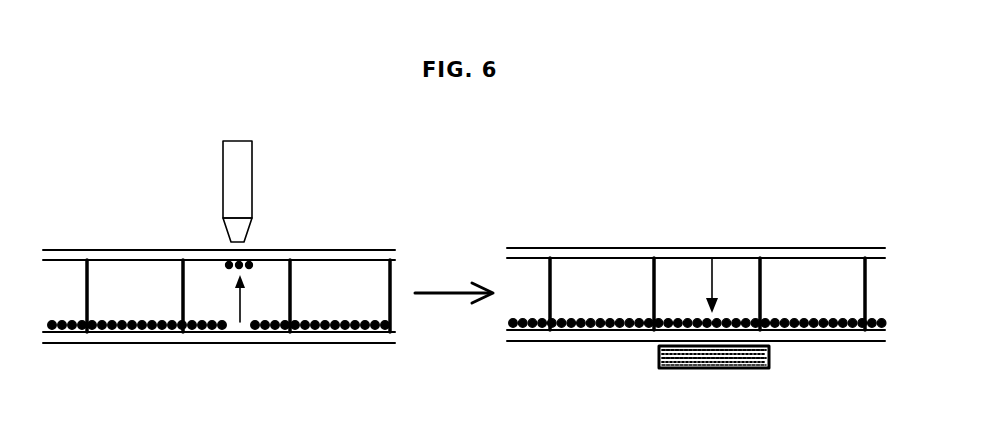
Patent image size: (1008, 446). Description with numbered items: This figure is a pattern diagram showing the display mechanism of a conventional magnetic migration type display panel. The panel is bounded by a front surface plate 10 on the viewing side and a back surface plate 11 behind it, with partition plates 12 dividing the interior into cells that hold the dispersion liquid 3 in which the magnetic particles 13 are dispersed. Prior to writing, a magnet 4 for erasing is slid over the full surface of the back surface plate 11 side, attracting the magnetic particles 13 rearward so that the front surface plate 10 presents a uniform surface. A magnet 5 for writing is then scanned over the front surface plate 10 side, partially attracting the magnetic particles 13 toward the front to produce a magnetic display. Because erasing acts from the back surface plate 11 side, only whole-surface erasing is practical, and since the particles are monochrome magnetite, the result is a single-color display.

The dispersion liquid 3 is at (244, 301).
The magnet for erasing 4 is at (658, 352).
The magnet for writing 5 is at (243, 182).
The front surface plate 10 is at (298, 256).
The back surface plate 11 is at (170, 335).
The partition plate 12 is at (392, 313).
The magnetic particles 13 is at (168, 324).